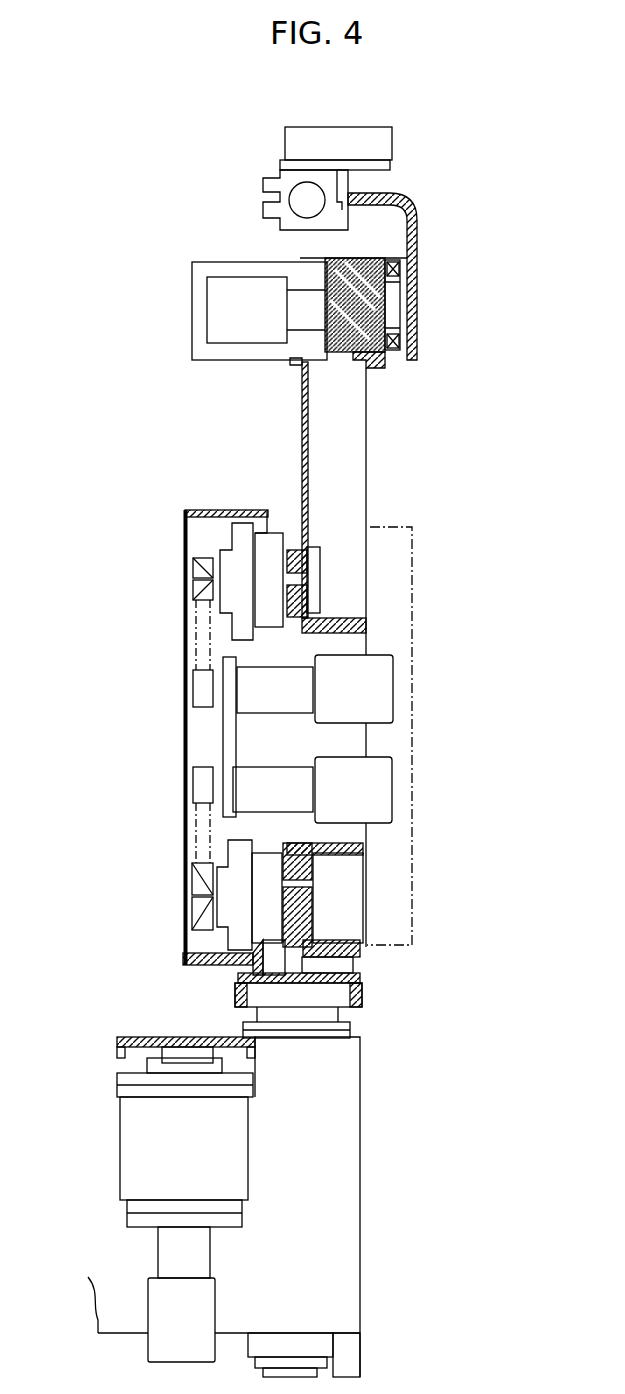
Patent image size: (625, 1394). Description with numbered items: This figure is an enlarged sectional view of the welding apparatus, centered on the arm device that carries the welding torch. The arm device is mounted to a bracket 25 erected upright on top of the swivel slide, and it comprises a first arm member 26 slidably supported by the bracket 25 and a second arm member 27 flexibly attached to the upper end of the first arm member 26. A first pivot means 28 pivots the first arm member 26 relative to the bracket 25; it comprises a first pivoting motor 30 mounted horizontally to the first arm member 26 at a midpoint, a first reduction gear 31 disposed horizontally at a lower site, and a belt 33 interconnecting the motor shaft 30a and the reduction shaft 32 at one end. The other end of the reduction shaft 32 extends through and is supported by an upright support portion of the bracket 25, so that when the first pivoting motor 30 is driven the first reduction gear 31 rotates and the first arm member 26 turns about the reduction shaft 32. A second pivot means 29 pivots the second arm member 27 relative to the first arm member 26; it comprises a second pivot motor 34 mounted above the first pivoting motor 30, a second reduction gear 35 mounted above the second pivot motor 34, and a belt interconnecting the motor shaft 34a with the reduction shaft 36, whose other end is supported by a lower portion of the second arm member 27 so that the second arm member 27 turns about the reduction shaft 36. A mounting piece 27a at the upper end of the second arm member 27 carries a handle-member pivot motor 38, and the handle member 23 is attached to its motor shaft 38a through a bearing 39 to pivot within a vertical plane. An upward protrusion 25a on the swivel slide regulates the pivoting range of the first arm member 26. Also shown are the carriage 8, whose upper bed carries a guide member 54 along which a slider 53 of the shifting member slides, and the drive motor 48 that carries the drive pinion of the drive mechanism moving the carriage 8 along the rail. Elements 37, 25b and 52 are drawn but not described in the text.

The handle member 23 is at (413, 207).
The handle-member pivot motor 38 is at (228, 282).
The bearing 39 is at (400, 263).
The motor shaft 38a is at (393, 320).
The mounting piece 27a is at (300, 358).
The second arm member 27 is at (355, 427).
The first arm member 26 is at (183, 938).
The second pivot means 29 is at (92, 510).
The second reduction gear 35 is at (228, 560).
The bearing 37 is at (277, 627).
The reduction shaft 36 is at (262, 628).
The second pivot motor 34 is at (203, 693).
The motor shaft 34a is at (247, 687).
The first pivoting motor 30 is at (213, 790).
The motor shaft 30a is at (213, 792).
The first pivot means 28 is at (100, 743).
The first reduction gear 31 is at (230, 848).
The reduction shaft 32 is at (268, 862).
The belt 33 is at (190, 853).
The support block 25b is at (310, 922).
The upward protrusion 25a is at (253, 968).
The bracket 25 is at (360, 990).
The carriage 8 is at (350, 1093).
The slider 53 is at (180, 1053).
The guide member 54 is at (117, 1042).
The motor 52 is at (240, 1155).
The drive motor 48 is at (160, 1345).